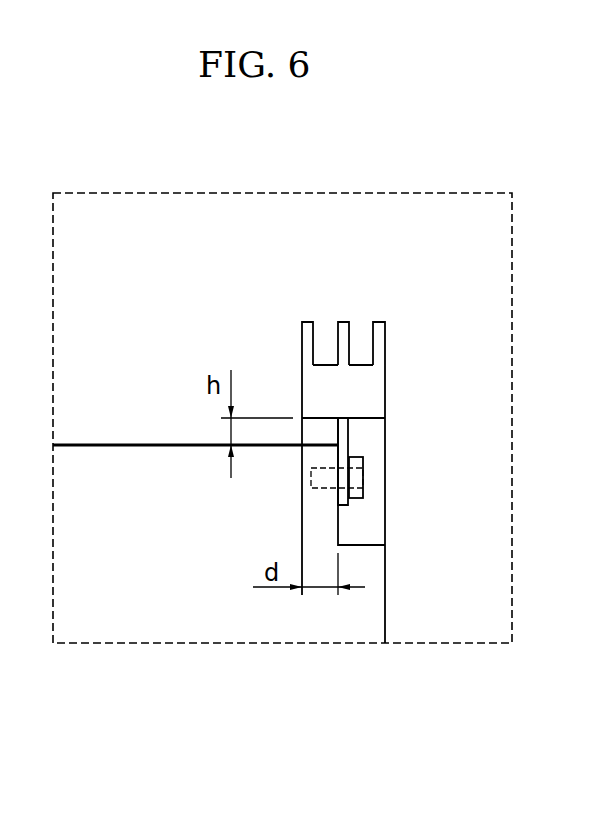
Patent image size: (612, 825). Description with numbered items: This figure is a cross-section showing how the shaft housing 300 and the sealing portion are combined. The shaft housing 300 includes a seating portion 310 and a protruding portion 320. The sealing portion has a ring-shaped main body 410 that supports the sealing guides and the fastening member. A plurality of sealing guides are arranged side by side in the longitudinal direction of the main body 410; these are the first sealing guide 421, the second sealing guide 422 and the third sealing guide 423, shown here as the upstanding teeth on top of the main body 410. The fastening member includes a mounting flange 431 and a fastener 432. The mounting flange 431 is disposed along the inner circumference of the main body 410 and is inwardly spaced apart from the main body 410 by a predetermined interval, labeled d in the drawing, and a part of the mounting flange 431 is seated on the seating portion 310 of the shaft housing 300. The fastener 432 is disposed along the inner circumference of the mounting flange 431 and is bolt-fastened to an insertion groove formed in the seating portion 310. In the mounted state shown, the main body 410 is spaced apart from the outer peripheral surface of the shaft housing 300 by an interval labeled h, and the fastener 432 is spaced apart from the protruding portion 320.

The shaft housing 300 is at (398, 621).
The seating portion 310 is at (338, 528).
The protruding portion 320 is at (387, 580).
The main body 410 is at (404, 375).
The first sealing guide 421 is at (303, 323).
The second sealing guide 422 is at (340, 322).
The third sealing guide 423 is at (378, 325).
The mounting flange 431 is at (343, 432).
The fastener 432 is at (342, 507).